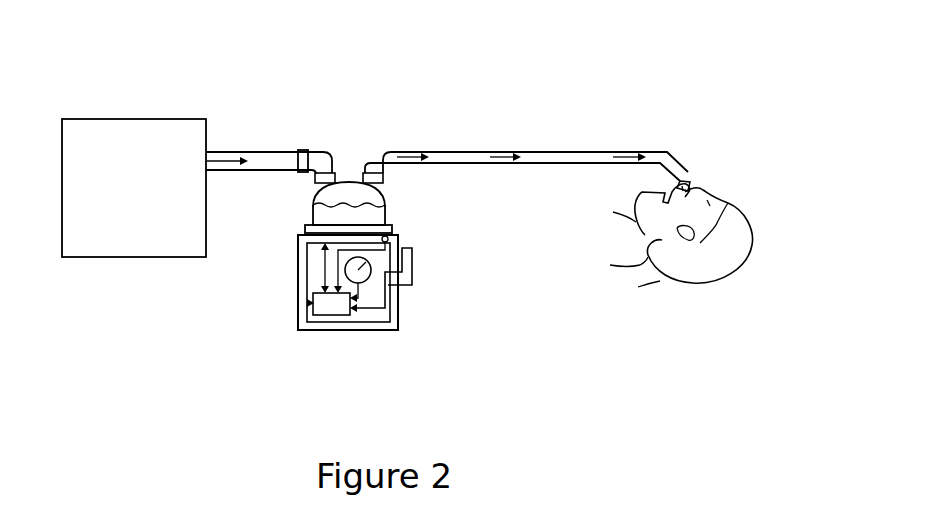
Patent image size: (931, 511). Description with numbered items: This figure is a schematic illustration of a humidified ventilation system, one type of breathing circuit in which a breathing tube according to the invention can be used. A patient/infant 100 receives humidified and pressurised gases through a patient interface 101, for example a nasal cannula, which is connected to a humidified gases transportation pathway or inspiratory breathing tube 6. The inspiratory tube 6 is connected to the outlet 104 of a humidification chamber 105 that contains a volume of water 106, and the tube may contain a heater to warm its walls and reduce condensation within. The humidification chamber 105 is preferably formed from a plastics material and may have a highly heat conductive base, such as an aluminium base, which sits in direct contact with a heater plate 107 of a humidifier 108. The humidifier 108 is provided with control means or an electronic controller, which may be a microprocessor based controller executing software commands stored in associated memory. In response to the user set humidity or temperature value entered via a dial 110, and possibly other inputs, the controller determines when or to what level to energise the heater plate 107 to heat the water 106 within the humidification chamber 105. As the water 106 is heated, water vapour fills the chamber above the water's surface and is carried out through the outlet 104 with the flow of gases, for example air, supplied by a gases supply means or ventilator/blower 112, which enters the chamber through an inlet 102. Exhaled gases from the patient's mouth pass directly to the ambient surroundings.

The ventilator/blower 112 is at (137, 119).
The inlet 102 is at (307, 172).
The outlet 104 is at (363, 174).
The humidification chamber 105 is at (313, 200).
The water 106 is at (350, 218).
The heater plate 107 is at (305, 228).
The humidifier 108 is at (292, 274).
The dial 110 is at (367, 282).
The inspiratory breathing tube 6 is at (535, 163).
The patient interface 101 is at (688, 183).
The patient/infant 100 is at (668, 280).